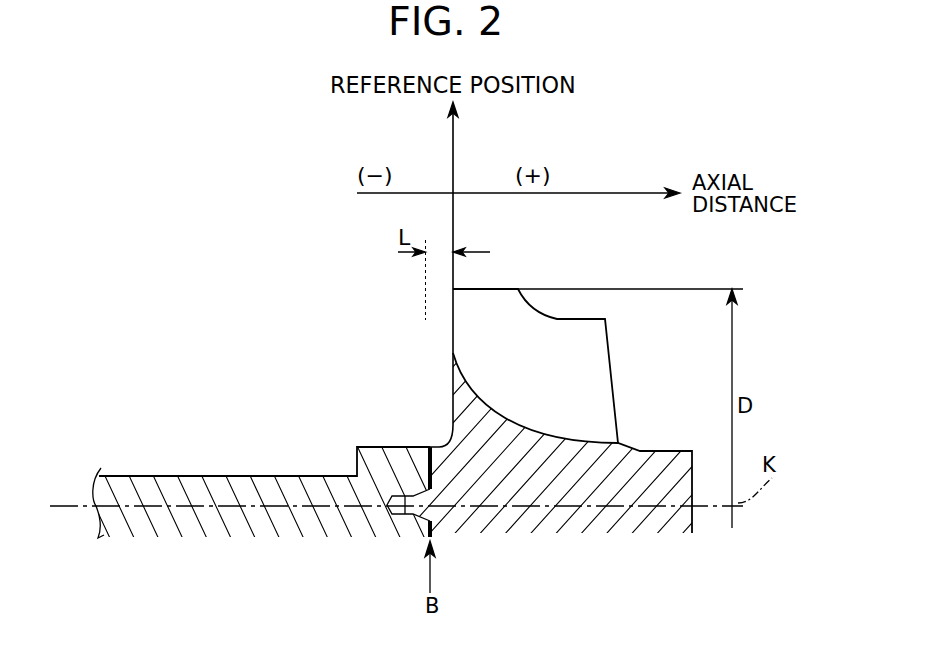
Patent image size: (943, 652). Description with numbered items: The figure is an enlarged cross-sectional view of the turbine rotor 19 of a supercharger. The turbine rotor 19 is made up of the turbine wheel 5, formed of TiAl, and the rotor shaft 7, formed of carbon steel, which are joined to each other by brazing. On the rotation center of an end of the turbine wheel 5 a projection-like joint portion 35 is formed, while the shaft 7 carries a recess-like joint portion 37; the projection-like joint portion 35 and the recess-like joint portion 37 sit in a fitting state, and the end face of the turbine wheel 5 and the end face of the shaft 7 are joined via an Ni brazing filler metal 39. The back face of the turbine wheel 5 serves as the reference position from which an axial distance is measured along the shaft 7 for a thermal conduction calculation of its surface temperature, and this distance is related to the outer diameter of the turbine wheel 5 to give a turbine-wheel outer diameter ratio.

The turbine wheel 5 is at (590, 378).
The shaft 7 is at (212, 476).
The turbine rotor 19 is at (298, 403).
The projection-like joint portion 35 is at (413, 515).
The recess-like joint portion 37 is at (392, 515).
The Ni brazing filler metal 39 is at (428, 448).